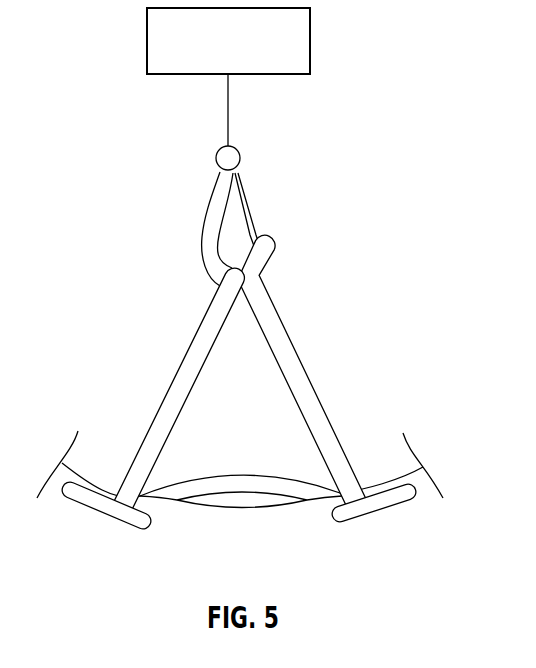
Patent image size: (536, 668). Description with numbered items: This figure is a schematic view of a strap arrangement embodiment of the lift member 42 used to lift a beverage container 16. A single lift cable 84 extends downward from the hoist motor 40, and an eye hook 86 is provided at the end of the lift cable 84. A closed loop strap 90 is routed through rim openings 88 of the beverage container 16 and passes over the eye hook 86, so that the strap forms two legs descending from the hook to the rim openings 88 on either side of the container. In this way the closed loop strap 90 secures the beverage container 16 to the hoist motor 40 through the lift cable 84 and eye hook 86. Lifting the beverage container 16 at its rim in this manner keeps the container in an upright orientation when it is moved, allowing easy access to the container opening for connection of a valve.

The beverage container 16 is at (215, 567).
The hoist motor 40 is at (242, 52).
The lift cable 84 is at (223, 90).
The lift member 42 is at (153, 173).
The eye hook 86 is at (200, 240).
The closed loop strap 90 is at (162, 410).
The rim opening 88 is at (90, 517).